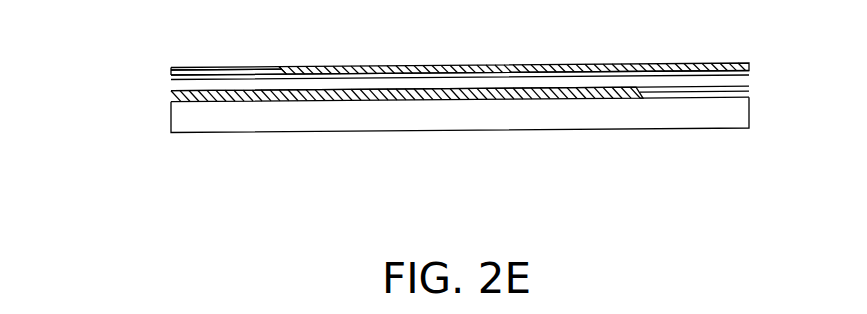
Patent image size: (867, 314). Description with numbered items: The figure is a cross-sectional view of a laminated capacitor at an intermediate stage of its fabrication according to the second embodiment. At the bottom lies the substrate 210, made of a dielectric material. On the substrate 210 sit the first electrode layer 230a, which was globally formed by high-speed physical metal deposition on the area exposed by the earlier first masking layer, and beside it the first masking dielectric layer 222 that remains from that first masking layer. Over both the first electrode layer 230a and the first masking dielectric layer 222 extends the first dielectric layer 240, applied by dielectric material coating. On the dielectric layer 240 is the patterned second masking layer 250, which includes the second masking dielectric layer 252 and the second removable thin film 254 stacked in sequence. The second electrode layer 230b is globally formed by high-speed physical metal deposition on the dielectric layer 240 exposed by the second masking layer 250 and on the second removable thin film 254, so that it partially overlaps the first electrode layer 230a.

The substrate 210 is at (697, 118).
The first masking dielectric layer 222 is at (740, 92).
The first electrode layer 230a is at (172, 94).
The second electrode layer 230b is at (749, 64).
The first dielectric layer 240 is at (740, 82).
The second masking layer 250 is at (160, 72).
The second masking dielectric layer 252 is at (171, 75).
The second removable thin film 254 is at (171, 69).